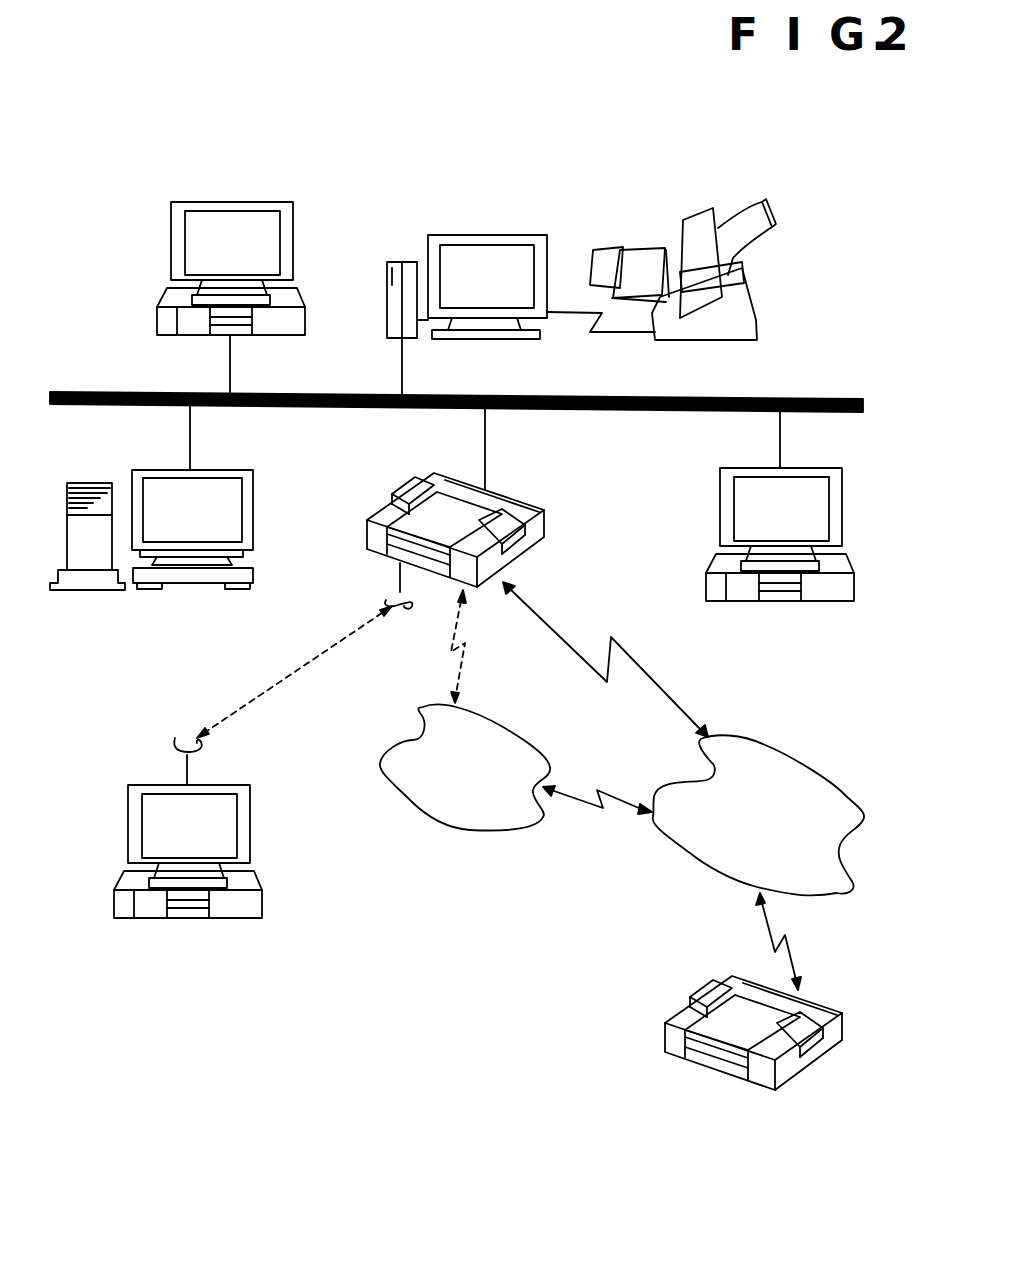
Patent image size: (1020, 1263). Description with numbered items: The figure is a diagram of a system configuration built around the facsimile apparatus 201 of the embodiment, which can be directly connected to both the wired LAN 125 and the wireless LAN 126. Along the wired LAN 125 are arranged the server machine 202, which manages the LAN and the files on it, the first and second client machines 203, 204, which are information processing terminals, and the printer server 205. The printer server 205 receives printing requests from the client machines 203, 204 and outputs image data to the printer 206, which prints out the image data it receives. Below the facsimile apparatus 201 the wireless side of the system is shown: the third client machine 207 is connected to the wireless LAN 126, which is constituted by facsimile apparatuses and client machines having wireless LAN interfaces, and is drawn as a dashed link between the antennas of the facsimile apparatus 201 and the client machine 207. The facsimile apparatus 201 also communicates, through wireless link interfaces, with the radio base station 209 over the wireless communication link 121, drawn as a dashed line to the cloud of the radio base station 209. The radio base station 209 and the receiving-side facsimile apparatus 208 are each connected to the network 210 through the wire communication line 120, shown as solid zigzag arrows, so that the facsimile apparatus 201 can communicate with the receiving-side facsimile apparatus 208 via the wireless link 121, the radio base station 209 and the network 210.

The wire communication line 120 is at (645, 667).
The wireless communication link 121 is at (460, 673).
The wired LAN 125 is at (610, 398).
The wireless LAN 126 is at (260, 693).
The facsimile apparatus 201 is at (520, 495).
The server machine 202 is at (178, 585).
The client machine WS-1 203 is at (193, 201).
The client machine WS-2 204 is at (713, 602).
The printer server 205 is at (458, 233).
The printer 206 is at (698, 210).
The client machine WS-3 207 is at (150, 918).
The receiving-side facsimile apparatus 208 is at (718, 1068).
The radio base station 209 is at (420, 808).
The network 210 is at (780, 747).